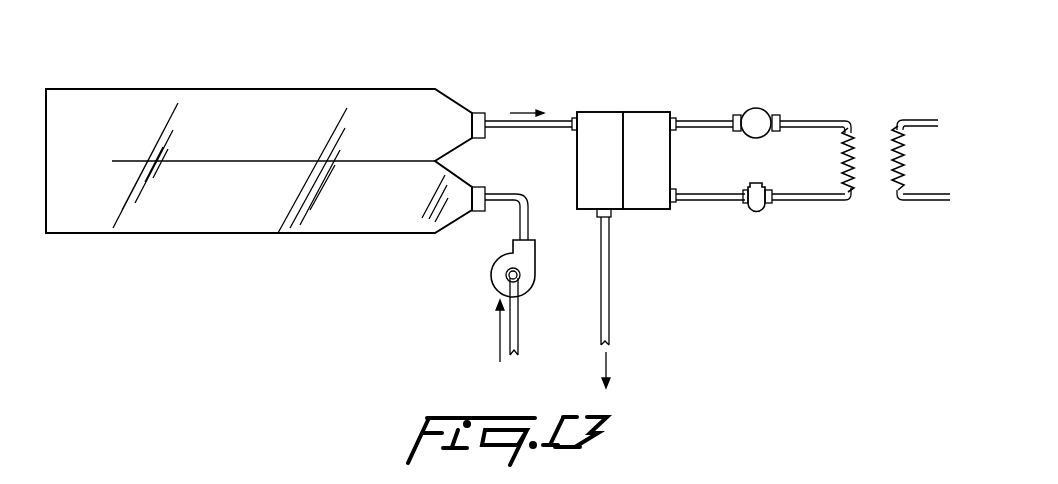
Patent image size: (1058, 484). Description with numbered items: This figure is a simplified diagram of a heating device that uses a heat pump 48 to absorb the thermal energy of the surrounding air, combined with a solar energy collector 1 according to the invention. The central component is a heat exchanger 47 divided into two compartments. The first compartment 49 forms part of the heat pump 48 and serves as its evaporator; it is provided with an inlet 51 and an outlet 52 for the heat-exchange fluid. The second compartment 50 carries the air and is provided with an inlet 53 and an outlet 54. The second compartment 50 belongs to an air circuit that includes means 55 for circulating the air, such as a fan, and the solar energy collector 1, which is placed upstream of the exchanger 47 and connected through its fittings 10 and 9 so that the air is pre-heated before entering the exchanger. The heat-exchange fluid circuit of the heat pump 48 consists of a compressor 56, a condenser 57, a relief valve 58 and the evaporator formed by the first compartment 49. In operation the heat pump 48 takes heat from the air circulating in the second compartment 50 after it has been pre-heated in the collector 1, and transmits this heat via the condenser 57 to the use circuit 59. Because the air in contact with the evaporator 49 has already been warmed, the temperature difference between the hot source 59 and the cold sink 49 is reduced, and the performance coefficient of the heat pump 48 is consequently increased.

The solar energy collector 1 is at (236, 74).
The lower nozzle fitting 9 is at (490, 212).
The upper nozzle fitting 10 is at (489, 124).
The heat exchanger 47 is at (626, 112).
The heat pump 48 is at (817, 118).
The first compartment 49 is at (643, 118).
The second compartment 50 is at (606, 126).
The inlet 51 is at (676, 202).
The outlet 52 is at (676, 120).
The inlet 53 is at (572, 124).
The outlet 54 is at (610, 214).
The means for the circulation of the air 55 is at (500, 283).
The compressor 56 is at (757, 112).
The condenser 57 is at (880, 158).
The relief valve 58 is at (760, 208).
The use circuit 59 is at (928, 203).